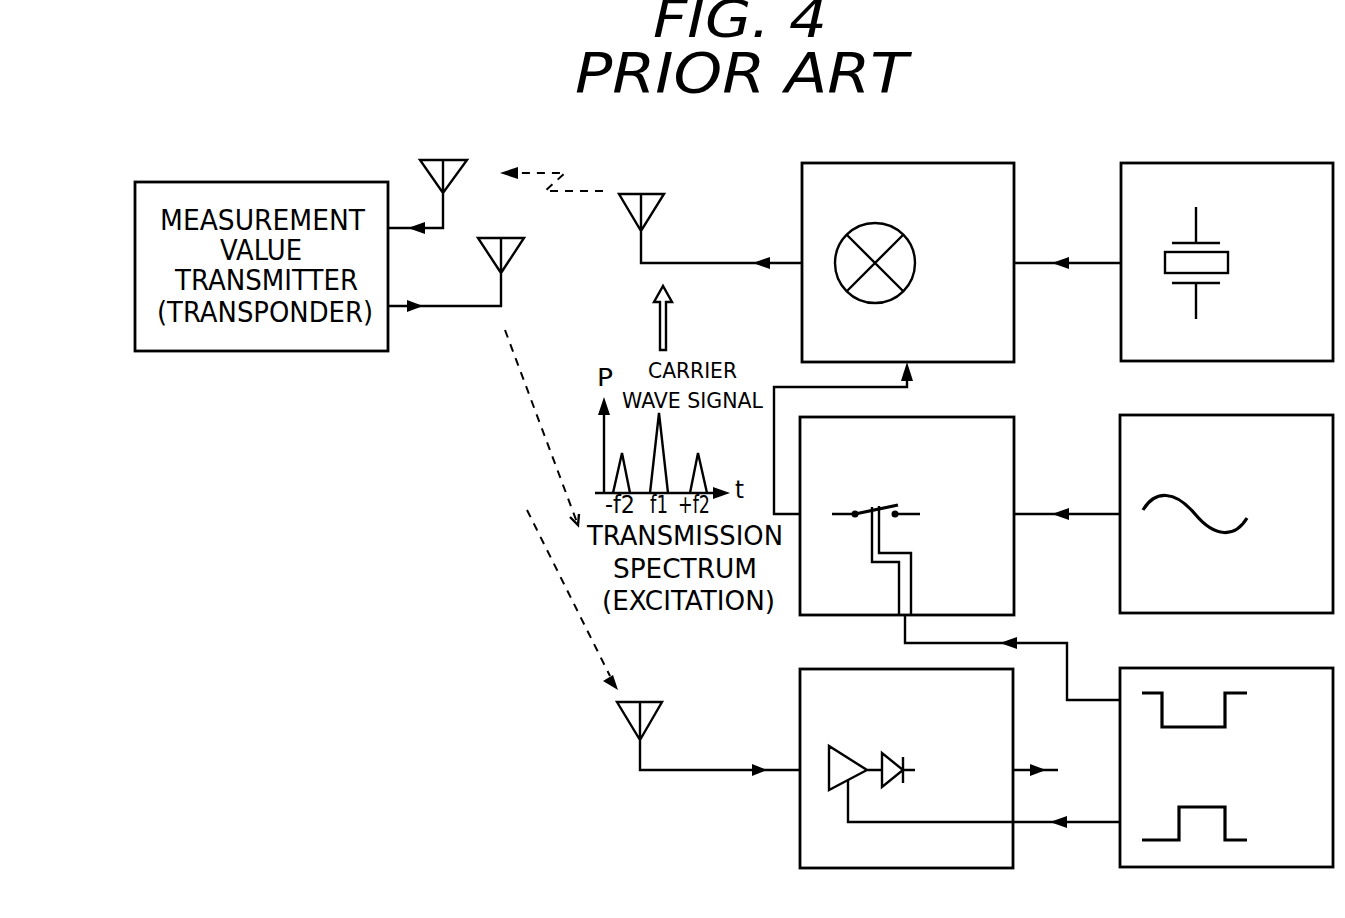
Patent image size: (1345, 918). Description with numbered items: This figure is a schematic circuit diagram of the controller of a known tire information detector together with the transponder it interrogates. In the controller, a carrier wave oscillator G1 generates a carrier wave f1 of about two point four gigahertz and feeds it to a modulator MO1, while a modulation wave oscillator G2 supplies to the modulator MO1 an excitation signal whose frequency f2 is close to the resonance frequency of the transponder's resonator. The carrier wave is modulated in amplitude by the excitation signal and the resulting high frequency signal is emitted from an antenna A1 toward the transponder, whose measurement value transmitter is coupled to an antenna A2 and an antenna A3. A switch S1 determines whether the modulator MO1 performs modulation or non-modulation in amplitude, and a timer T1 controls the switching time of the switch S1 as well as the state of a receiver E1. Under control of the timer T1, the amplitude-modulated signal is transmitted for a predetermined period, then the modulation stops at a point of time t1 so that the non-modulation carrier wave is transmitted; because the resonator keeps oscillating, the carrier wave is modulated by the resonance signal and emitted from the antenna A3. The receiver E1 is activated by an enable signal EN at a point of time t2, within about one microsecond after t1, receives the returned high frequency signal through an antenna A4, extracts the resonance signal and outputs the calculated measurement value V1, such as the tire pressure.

The antenna A1 is at (697, 231).
The antenna A2 is at (437, 197).
The antenna A3 is at (466, 275).
The antenna A4 is at (697, 739).
The modulator MO1 is at (908, 262).
The carrier wave oscillator G1 is at (1227, 262).
The modulation wave oscillator G2 is at (1226, 514).
The switch S1 is at (907, 516).
The receiver E1 is at (906, 768).
The timer T1 is at (1226, 767).
The carrier wave f1 is at (1067, 248).
The excitation signal frequency f2 is at (1067, 502).
The measurement value output V1 is at (1052, 771).
The enable signal EN is at (1066, 808).
The point of time t1 is at (1194, 726).
The point of time t2 is at (1194, 807).